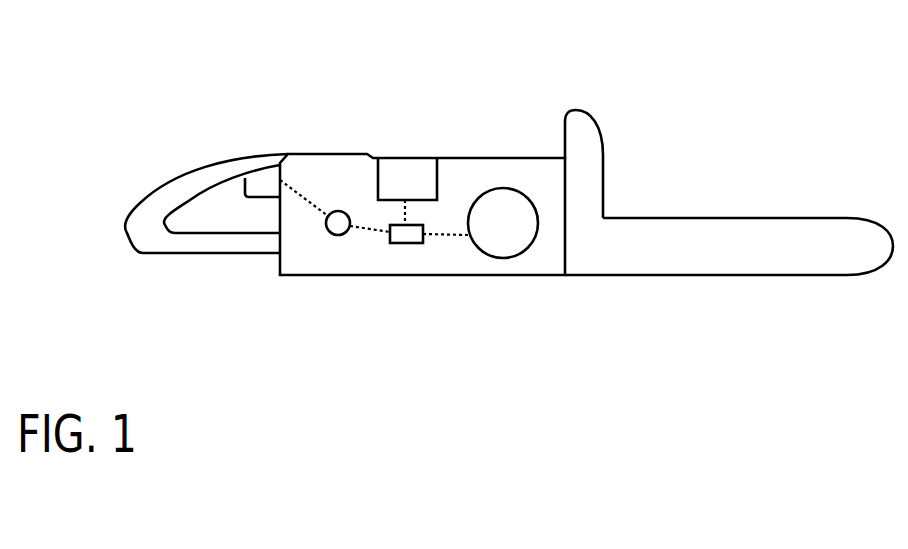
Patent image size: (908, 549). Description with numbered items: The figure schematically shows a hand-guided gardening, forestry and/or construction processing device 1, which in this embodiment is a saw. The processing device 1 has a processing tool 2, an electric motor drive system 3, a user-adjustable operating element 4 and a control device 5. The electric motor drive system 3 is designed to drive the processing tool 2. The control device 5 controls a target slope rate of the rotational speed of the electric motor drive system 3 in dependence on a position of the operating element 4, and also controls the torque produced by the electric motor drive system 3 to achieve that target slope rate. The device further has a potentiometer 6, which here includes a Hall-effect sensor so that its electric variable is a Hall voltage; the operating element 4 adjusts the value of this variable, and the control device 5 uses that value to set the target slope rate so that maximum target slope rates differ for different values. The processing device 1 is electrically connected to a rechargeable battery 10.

The gardening, forestry and/or construction processing device 1 is at (513, 157).
The processing tool 2 is at (740, 218).
The electric motor drive system 3 is at (482, 253).
The user-adjustable operating element 4 is at (262, 182).
The control device 5 is at (413, 233).
The potentiometer 6 is at (332, 212).
The rechargeable battery 10 is at (400, 173).